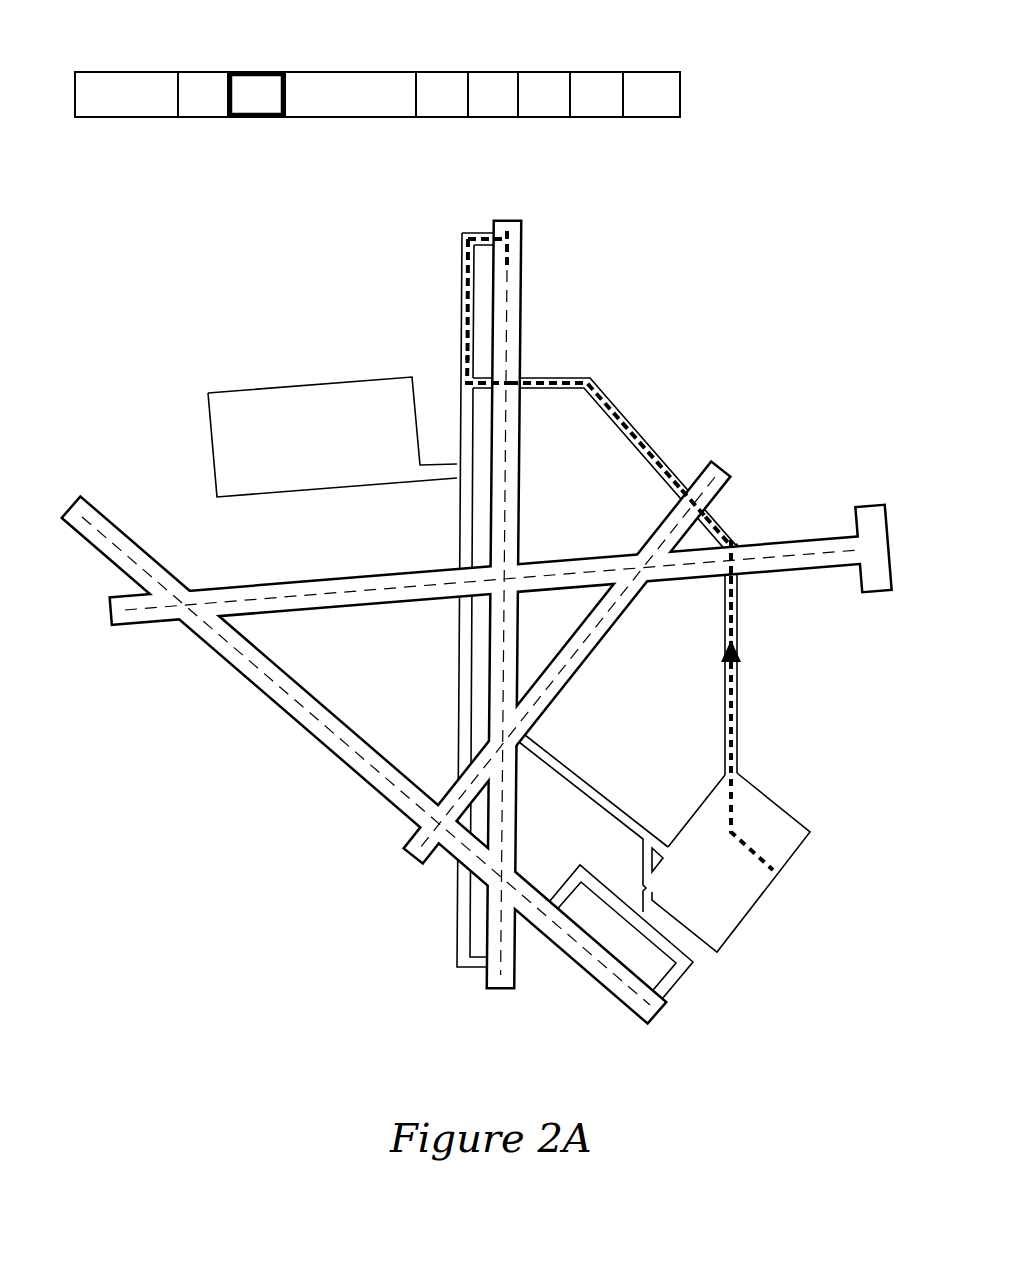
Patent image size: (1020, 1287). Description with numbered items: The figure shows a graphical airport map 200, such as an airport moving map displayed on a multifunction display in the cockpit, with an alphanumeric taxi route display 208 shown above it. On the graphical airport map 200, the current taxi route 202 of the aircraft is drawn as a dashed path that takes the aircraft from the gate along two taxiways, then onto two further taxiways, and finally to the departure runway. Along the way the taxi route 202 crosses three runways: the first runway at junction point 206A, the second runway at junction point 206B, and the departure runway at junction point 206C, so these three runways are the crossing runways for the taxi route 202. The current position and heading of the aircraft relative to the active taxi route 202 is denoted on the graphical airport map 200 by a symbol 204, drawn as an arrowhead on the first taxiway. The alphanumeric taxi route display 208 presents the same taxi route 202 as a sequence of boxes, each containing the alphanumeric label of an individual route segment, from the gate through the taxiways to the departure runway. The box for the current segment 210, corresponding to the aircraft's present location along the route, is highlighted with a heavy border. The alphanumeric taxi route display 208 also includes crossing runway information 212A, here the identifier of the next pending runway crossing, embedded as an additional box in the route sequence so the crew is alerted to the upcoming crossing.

The graphical airport map 200 is at (476, 620).
The taxi route 202 is at (733, 836).
The symbol 204 is at (736, 661).
The junction point 206A is at (736, 564).
The junction point 206B is at (695, 503).
The junction point 206C is at (508, 381).
The alphanumeric taxi route display 208 is at (375, 105).
The current segment 210 is at (255, 119).
The crossing runway information 212A is at (351, 75).